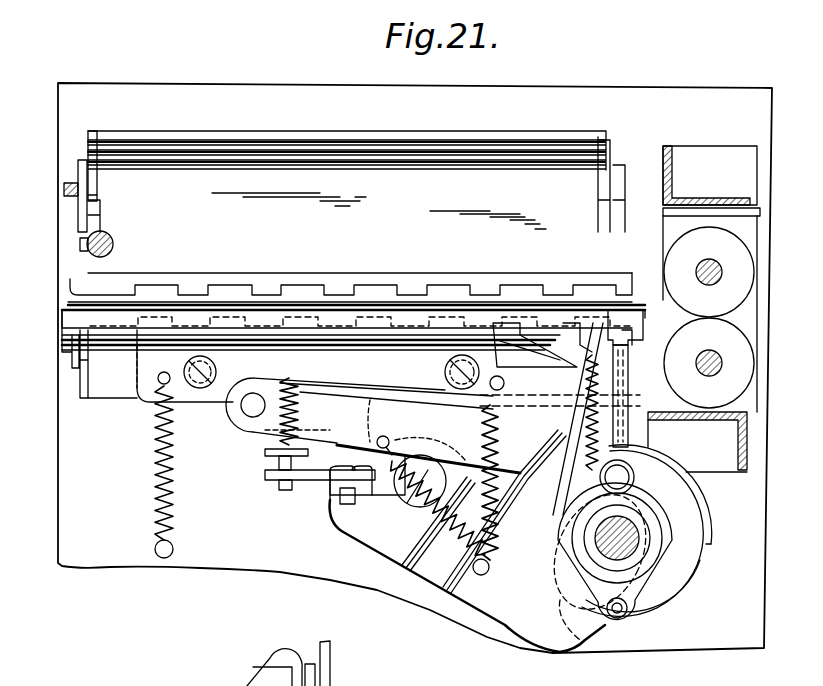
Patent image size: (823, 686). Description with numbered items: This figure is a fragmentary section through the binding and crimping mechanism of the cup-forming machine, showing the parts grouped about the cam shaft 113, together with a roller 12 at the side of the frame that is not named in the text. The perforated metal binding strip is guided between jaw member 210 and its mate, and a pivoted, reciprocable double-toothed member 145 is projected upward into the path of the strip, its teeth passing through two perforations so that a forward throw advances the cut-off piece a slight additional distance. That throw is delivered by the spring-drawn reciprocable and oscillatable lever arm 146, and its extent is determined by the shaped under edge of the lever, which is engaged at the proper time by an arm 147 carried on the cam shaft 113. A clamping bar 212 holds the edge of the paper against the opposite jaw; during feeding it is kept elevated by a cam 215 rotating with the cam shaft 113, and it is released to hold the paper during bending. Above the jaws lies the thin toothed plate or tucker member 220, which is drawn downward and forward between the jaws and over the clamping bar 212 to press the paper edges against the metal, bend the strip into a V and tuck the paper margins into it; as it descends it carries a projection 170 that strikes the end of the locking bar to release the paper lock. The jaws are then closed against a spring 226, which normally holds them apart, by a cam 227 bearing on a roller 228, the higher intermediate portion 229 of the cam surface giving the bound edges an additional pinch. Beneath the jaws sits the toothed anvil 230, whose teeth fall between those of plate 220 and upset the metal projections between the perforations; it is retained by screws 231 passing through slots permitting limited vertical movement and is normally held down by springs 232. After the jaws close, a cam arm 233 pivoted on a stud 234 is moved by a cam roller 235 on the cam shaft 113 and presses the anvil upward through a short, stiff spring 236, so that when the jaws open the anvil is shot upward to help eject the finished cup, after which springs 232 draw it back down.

The platen roller 12 is at (708, 262).
The projection 170 is at (114, 242).
The toothed plate or tucker member 220 is at (346, 282).
The clamping bar 212 is at (440, 302).
The jaw member 210 is at (68, 330).
The toothed member or anvil 230 is at (158, 386).
The screws 231 is at (202, 390).
The springs 232 is at (172, 474).
The lever arm 146 is at (380, 408).
The short, stiff spring 236 is at (268, 450).
The stud 234 is at (410, 500).
The double-toothed member 145 is at (560, 419).
The spring 226 is at (620, 402).
The intermediate portion 229 is at (560, 492).
The cam 227 is at (522, 567).
The cam arm 233 is at (528, 630).
The arm 147 is at (674, 620).
The cam 215 is at (700, 522).
The cam shaft 113 is at (636, 540).
The roller 228 is at (636, 470).
The cam roller 235 is at (565, 605).